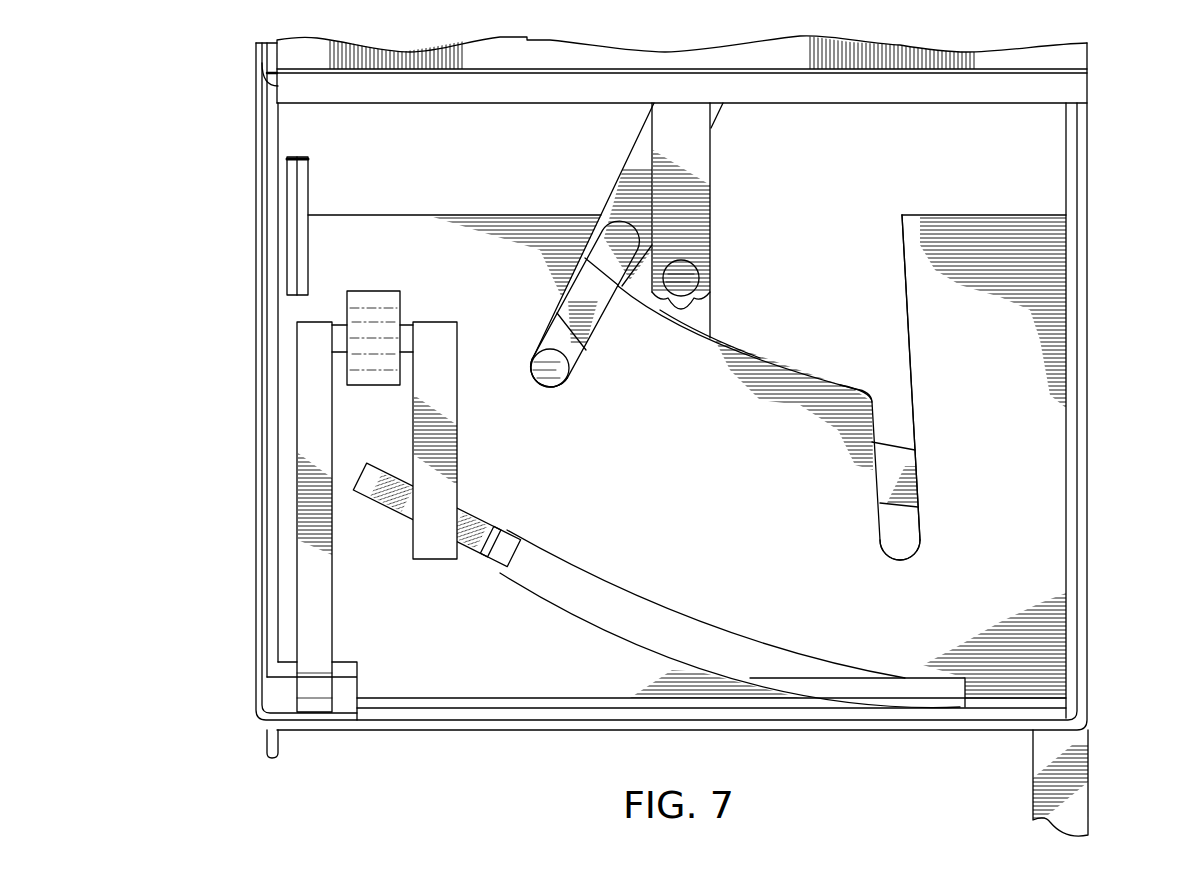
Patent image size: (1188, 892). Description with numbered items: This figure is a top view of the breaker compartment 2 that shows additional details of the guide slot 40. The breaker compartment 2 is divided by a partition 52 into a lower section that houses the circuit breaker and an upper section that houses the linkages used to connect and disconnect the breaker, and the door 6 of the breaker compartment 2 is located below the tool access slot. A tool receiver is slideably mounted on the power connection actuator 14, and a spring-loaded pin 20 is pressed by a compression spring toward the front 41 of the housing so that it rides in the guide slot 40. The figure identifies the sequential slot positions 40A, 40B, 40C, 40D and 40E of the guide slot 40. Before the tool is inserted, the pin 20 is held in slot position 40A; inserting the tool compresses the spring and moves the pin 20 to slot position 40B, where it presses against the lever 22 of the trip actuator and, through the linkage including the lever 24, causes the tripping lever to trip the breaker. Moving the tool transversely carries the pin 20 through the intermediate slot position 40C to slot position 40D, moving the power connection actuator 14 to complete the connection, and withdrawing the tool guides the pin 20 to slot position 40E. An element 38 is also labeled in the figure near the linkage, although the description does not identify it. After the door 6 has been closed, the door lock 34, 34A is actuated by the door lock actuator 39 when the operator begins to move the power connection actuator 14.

The breaker compartment 2 is at (215, 555).
The door 6 is at (1068, 771).
The power connection actuator 14 is at (625, 170).
The pin 20 is at (551, 380).
The lever 22 is at (568, 287).
The lever 24 is at (697, 197).
The door lock 34 is at (316, 600).
The door lock 34A is at (462, 443).
The plate 38 is at (918, 254).
The door lock actuator 39 is at (468, 568).
The guide slot 40 is at (580, 350).
The slot position 40A is at (522, 350).
The slot position 40B is at (630, 300).
The intermediate slot position 40C is at (727, 362).
The slot position 40D is at (853, 400).
The slot position 40E is at (935, 552).
The front 41 is at (878, 748).
The partition 52 is at (1035, 158).